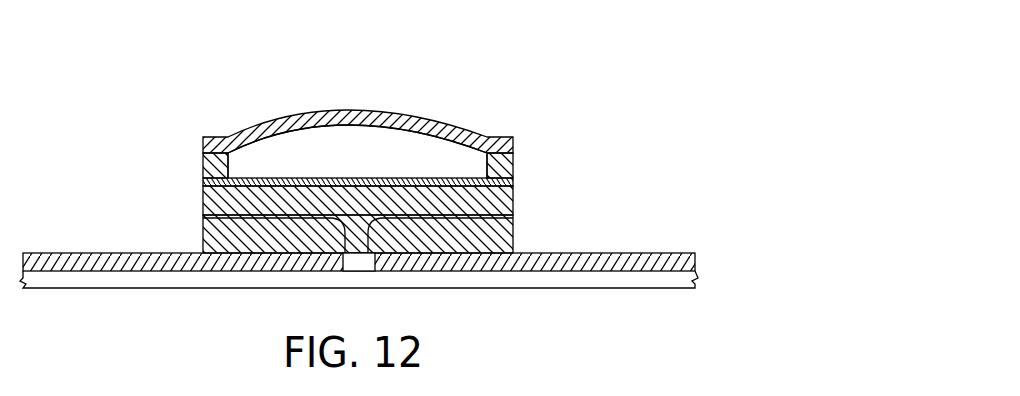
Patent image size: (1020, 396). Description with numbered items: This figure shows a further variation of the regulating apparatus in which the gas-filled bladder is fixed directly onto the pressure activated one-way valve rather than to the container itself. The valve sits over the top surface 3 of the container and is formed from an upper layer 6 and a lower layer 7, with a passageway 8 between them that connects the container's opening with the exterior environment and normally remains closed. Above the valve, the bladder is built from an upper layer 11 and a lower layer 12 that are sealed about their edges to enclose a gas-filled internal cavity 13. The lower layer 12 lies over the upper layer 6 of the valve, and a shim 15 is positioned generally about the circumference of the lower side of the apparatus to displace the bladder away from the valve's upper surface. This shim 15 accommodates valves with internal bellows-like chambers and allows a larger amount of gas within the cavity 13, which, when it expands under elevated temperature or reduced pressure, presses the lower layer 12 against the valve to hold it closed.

The top surface 3 is at (670, 252).
The upper layer 6 is at (512, 198).
The lower layer 7 is at (492, 237).
The passageway 8 is at (203, 210).
The upper layer 11 is at (447, 122).
The lower layer 12 is at (392, 178).
The internal cavity 13 is at (338, 163).
The shim 15 is at (200, 168).